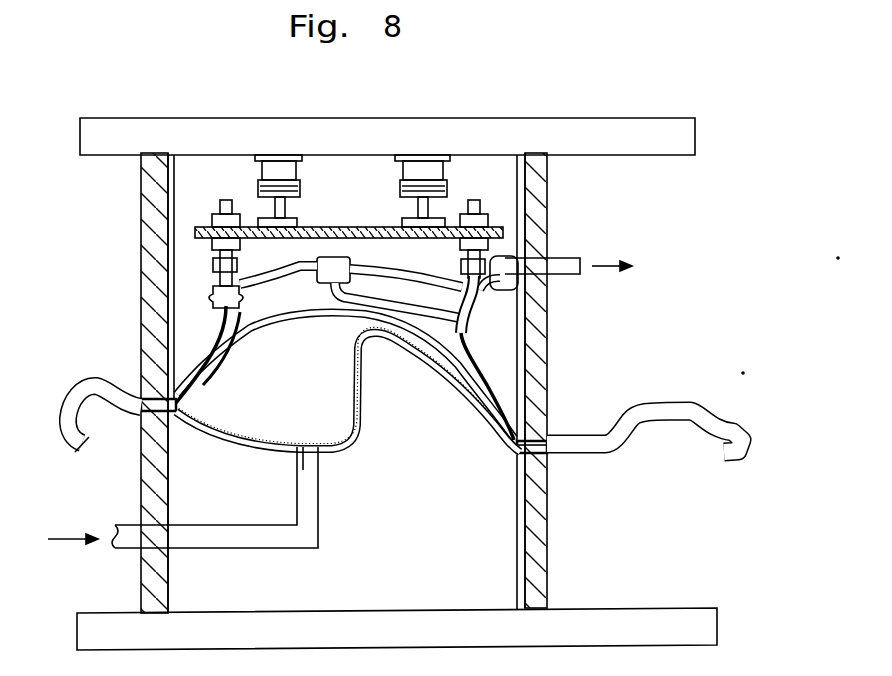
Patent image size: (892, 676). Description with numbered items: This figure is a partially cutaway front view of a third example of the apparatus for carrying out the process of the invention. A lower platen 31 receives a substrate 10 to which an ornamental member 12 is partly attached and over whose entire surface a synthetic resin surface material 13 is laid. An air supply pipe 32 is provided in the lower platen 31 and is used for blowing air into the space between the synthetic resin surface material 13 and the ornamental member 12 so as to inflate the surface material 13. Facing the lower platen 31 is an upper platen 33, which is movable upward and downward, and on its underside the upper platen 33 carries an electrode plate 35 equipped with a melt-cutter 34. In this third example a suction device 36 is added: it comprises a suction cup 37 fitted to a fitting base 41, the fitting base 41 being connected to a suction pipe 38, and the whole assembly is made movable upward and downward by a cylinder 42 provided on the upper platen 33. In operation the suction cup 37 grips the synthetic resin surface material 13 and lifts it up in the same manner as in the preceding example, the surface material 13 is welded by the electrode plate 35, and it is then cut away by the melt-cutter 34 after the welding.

The substrate 10 is at (587, 458).
The ornamental member 12 is at (343, 408).
The synthetic resin surface material 13 is at (319, 322).
The lower platen 31 is at (441, 612).
The air supply pipe 32 is at (312, 484).
The upper platen 33 is at (371, 138).
The melt-cutter 34 is at (533, 415).
The electrode plate 35 is at (543, 222).
The suction device 36 is at (467, 336).
The suction cup 37 is at (212, 331).
The suction pipe 38 is at (213, 292).
The fitting base 41 is at (327, 226).
The cylinder 42 is at (255, 172).